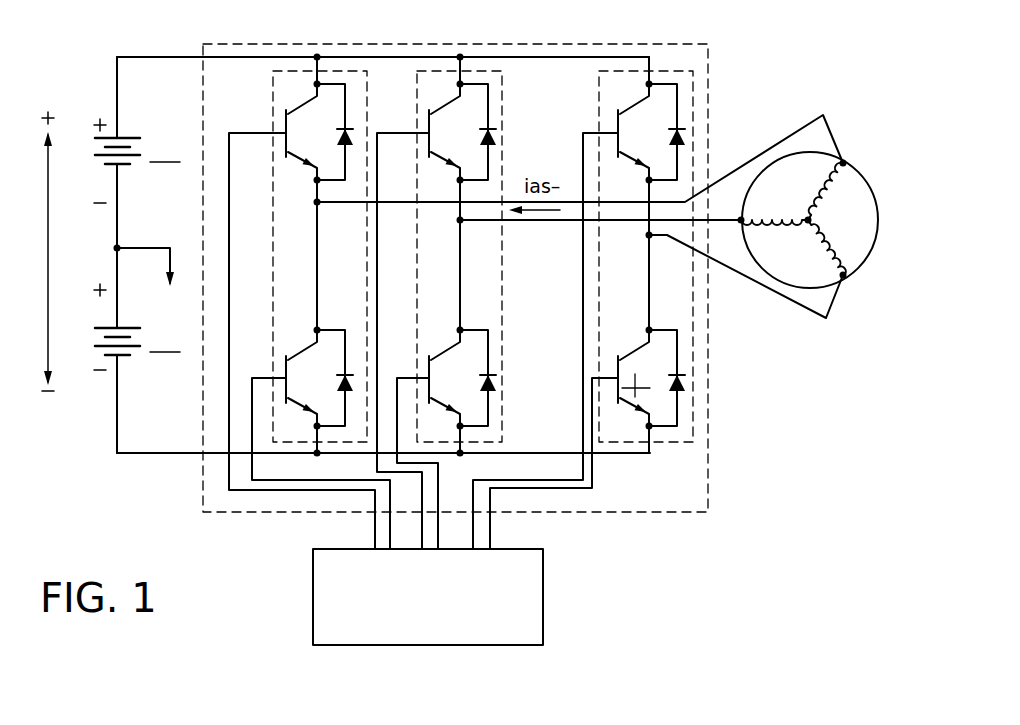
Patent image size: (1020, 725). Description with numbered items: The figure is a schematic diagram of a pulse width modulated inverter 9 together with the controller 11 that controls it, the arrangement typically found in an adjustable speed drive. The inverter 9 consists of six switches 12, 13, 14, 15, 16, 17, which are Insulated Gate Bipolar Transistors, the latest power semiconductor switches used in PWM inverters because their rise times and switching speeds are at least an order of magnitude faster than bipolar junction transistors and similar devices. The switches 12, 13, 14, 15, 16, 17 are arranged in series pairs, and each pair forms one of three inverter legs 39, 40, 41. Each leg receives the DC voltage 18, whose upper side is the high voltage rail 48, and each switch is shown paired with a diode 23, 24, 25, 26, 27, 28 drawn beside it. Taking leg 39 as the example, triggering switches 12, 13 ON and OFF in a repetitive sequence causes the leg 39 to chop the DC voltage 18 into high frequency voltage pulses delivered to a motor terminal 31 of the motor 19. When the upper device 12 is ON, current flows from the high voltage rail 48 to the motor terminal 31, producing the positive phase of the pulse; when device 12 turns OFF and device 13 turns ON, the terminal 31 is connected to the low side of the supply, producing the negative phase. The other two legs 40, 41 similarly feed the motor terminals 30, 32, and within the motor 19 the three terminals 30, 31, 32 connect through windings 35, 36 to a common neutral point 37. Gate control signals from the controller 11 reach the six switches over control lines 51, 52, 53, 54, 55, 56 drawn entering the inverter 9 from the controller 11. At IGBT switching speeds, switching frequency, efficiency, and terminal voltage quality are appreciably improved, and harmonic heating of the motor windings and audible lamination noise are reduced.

The inverter 9 is at (708, 462).
The controller 11 is at (543, 596).
The switch 12 is at (327, 88).
The switch 13 is at (333, 335).
The switch 14 is at (477, 88).
The switch 15 is at (476, 338).
The switch 16 is at (667, 88).
The switch 17 is at (665, 338).
The DC voltage 18 is at (101, 86).
The three-phase motor 19 is at (864, 168).
The freewheeling diode 23 is at (355, 133).
The freewheeling diode 24 is at (340, 377).
The freewheeling diode 25 is at (498, 133).
The freewheeling diode 26 is at (490, 382).
The freewheeling diode 27 is at (688, 135).
The freewheeling diode 28 is at (688, 385).
The motor terminal 30 is at (745, 216).
The motor terminal 31 is at (843, 160).
The motor terminal 32 is at (843, 278).
The stator winding 35 is at (772, 222).
The stator winding 36 is at (809, 195).
The neutral point winding 37 is at (812, 217).
The inverter leg 39 is at (283, 80).
The inverter leg 40 is at (435, 90).
The inverter leg 41 is at (618, 88).
The high voltage rail 48 is at (172, 55).
The gate control line 51 is at (245, 493).
The gate control line 52 is at (300, 490).
The gate control line 53 is at (380, 357).
The gate control line 54 is at (397, 433).
The gate control line 55 is at (527, 480).
The gate control line 56 is at (593, 485).